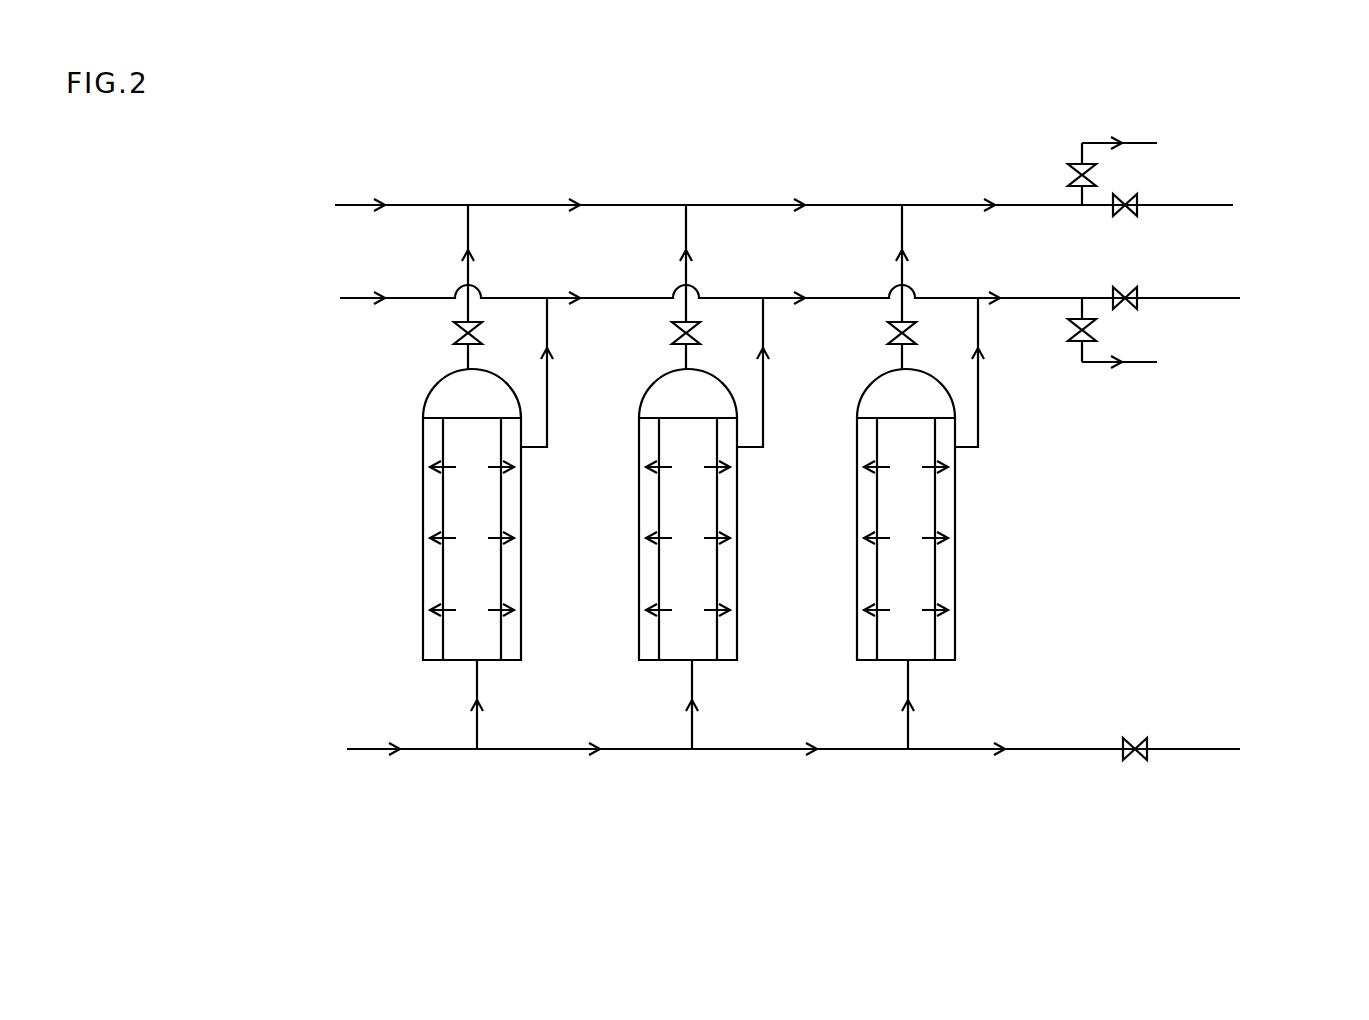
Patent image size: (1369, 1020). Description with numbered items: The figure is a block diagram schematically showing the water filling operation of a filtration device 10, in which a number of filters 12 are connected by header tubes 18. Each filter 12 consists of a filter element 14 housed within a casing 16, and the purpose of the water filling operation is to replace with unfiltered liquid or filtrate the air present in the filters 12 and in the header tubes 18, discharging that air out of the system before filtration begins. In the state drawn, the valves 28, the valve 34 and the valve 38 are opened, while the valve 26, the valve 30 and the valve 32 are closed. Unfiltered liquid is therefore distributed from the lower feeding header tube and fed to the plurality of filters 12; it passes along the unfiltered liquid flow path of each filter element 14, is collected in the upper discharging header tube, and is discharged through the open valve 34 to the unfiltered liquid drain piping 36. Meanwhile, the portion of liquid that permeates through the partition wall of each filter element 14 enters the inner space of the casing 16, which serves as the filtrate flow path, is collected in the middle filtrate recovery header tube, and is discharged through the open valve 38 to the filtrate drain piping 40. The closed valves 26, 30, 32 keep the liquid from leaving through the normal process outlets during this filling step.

The filtration device 10 is at (280, 460).
The filter 12 is at (964, 514).
The filter element 14 is at (928, 578).
The casing 16 is at (955, 617).
The header tube 18 is at (530, 205).
The valve 26 is at (1136, 763).
The valve 28 is at (454, 337).
The valve 30 is at (1128, 217).
The valve 32 is at (1120, 289).
The valve 34 is at (1078, 166).
The unfiltered liquid drain piping 36 is at (1097, 143).
The valve 38 is at (1075, 346).
The filtrate drain piping 40 is at (1098, 363).